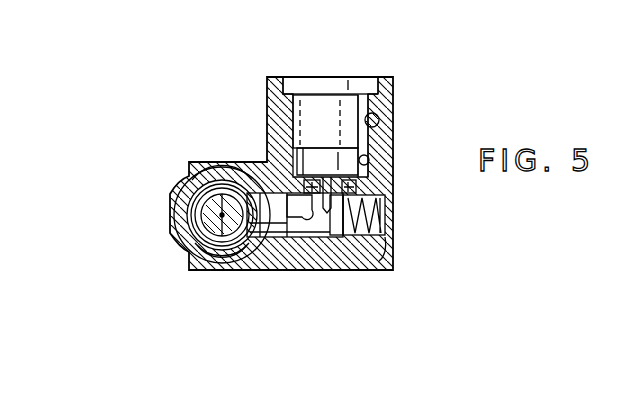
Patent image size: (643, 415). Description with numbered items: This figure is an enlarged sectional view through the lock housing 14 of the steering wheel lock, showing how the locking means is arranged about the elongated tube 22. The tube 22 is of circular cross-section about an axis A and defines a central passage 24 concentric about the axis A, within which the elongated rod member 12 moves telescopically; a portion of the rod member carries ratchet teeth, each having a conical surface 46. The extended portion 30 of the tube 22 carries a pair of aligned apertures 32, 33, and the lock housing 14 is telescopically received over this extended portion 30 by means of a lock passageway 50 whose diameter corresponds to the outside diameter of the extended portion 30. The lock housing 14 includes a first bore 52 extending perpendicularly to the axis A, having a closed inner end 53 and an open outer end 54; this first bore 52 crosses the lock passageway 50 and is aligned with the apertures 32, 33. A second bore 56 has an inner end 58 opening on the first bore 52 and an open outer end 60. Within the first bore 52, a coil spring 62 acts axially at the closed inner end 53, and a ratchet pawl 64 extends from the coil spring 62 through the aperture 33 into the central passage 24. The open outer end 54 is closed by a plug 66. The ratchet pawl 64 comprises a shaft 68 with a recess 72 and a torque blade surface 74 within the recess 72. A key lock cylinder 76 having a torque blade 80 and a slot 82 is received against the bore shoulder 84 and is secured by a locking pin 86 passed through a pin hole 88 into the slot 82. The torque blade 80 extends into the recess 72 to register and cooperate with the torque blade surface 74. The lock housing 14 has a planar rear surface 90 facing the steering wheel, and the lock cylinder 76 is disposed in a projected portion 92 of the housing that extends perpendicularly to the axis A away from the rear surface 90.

The elongated rod member 12 is at (188, 268).
The lock housing 14 is at (266, 106).
The elongated tube 22 is at (182, 172).
The central passage 24 is at (222, 212).
The extended portion 30 is at (178, 252).
The aperture 32 is at (169, 198).
The aperture 33 is at (268, 241).
The conical surface 46 is at (200, 216).
The lock passageway 50 is at (198, 163).
The first bore 52 is at (367, 236).
The closed inner end 53 is at (393, 253).
The open outer end 54 is at (172, 232).
The second bore 56 is at (368, 157).
The inner end 58 is at (356, 187).
The open outer end 60 is at (296, 76).
The coil spring 62 is at (381, 205).
The ratchet pawl 64 is at (283, 238).
The plug 66 is at (170, 208).
The shaft 68 is at (296, 229).
The recess 72 is at (309, 214).
The torque blade surface 74 is at (345, 238).
The key lock cylinder 76 is at (308, 77).
The torque blade 80 is at (266, 160).
The slot 82 is at (378, 119).
The bore shoulder 84 is at (370, 112).
The locking pin 86 is at (380, 113).
The pin hole 88 is at (365, 118).
The planar rear surface 90 is at (210, 244).
The projected portion 92 is at (392, 82).
The axis A is at (180, 180).